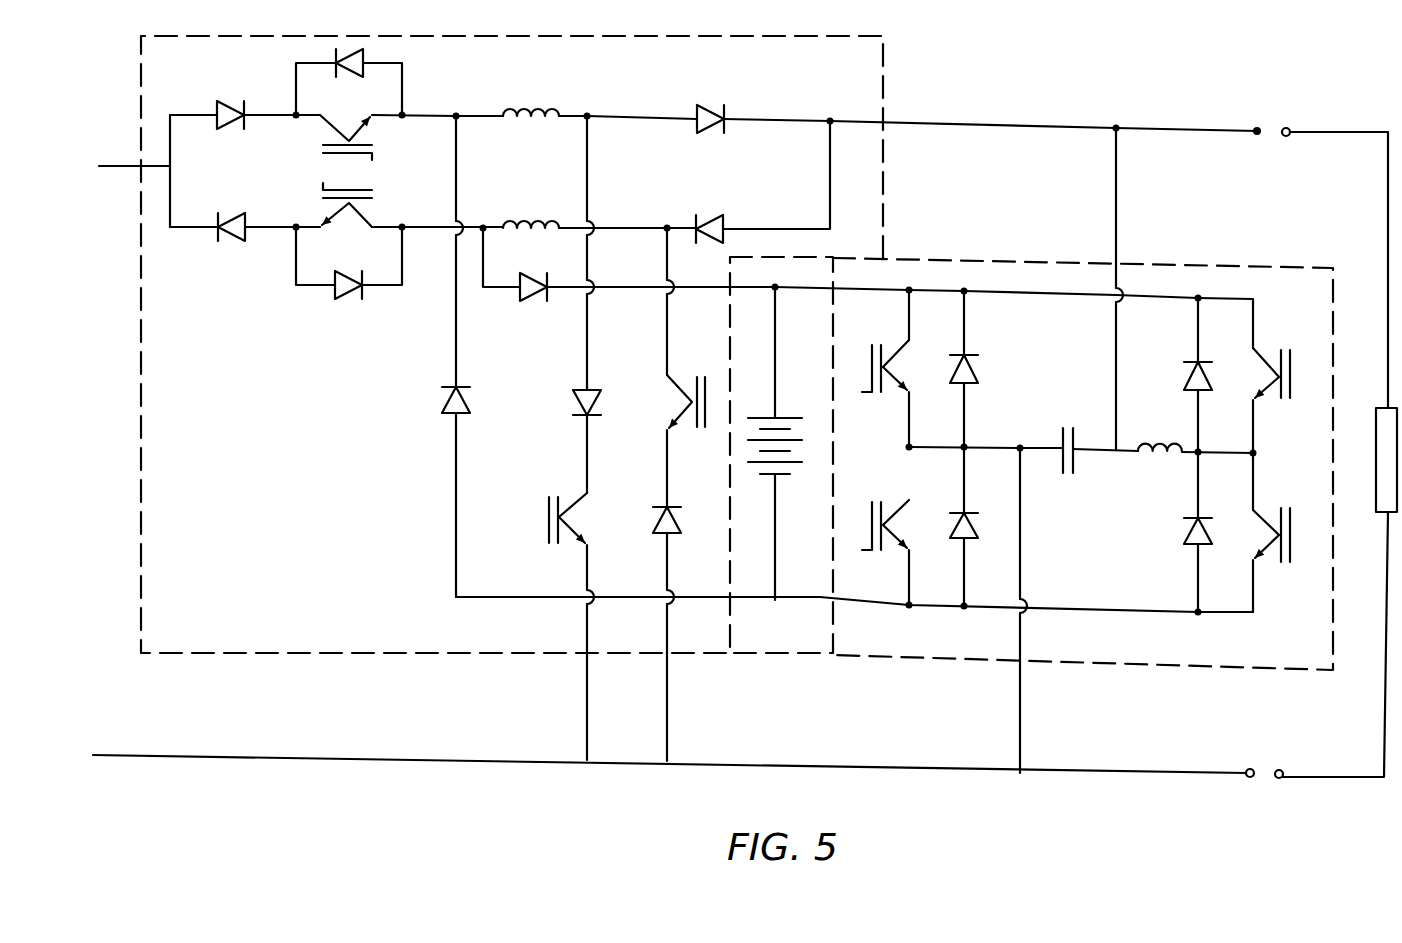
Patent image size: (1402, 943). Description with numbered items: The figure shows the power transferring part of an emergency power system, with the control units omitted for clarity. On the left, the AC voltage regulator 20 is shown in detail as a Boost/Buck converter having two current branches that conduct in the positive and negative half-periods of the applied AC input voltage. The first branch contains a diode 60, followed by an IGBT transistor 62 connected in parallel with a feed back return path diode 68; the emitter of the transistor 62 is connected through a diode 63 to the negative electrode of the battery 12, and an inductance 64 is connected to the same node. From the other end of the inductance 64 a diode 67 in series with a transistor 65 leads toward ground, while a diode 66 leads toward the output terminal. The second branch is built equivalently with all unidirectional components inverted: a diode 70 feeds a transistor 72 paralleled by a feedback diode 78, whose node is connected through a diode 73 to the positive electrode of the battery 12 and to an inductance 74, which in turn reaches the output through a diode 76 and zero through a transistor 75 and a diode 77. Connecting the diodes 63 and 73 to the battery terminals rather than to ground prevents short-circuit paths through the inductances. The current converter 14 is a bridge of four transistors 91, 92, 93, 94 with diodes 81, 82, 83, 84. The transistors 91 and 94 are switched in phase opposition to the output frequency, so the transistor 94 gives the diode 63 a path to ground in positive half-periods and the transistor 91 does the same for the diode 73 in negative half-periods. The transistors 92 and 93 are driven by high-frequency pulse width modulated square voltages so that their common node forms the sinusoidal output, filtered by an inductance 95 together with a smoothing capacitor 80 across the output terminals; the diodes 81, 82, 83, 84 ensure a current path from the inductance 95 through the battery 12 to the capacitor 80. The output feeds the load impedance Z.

The battery 12 is at (782, 457).
The current converter 14 is at (1083, 464).
The AC voltage regulator 20 is at (512, 344).
The diode 60 is at (226, 100).
The transistor 62 is at (373, 132).
The diode 63 is at (472, 406).
The inductance 64 is at (526, 104).
The transistor 65 is at (574, 509).
The diode 66 is at (709, 103).
The diode 67 is at (590, 388).
The feed back return path diode 68 is at (363, 78).
The diode 70 is at (231, 243).
The transistor 72 is at (374, 212).
The diode 73 is at (531, 302).
The inductance 74 is at (521, 214).
The transistor 75 is at (669, 400).
The diode 76 is at (711, 213).
The diode 77 is at (675, 533).
The feedback diode 78 is at (349, 301).
The smoothing capacitor 80 is at (1061, 441).
The diode 81 is at (981, 370).
The diode 82 is at (1182, 528).
The diode 83 is at (1183, 378).
The diode 84 is at (980, 528).
The transistor 91 is at (894, 366).
The transistor 92 is at (1268, 530).
The transistor 93 is at (1277, 378).
The transistor 94 is at (895, 518).
The inductance 95 is at (1150, 452).
The load impedance Z is at (1374, 452).